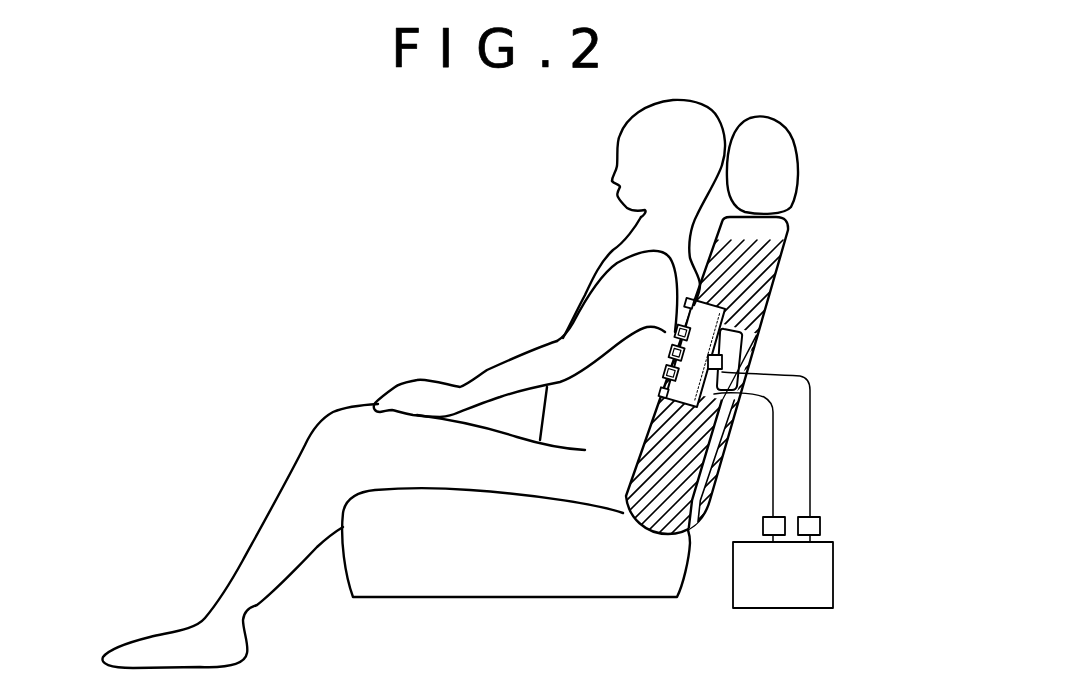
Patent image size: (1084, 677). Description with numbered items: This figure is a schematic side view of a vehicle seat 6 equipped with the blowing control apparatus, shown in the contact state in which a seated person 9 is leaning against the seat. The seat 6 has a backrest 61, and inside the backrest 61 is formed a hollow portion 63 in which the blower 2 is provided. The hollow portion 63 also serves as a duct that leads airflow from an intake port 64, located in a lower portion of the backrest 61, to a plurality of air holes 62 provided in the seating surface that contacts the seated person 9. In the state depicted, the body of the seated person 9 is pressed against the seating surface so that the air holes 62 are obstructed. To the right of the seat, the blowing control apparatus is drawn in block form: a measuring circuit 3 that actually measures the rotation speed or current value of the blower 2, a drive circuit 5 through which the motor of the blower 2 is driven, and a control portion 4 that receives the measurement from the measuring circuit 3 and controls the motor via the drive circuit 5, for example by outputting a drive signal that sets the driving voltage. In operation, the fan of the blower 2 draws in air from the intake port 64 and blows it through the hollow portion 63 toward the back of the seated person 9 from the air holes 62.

The blower 2 is at (720, 363).
The measuring circuit 3 is at (785, 522).
The control portion 4 is at (792, 604).
The drive circuit 5 is at (820, 525).
The vehicle seat 6 is at (474, 620).
The seated person 9 is at (587, 274).
The backrest 61 is at (786, 248).
The air holes 62 is at (659, 346).
The hollow portion 63 is at (743, 350).
The intake port 64 is at (691, 528).